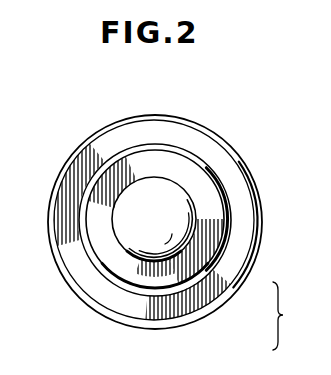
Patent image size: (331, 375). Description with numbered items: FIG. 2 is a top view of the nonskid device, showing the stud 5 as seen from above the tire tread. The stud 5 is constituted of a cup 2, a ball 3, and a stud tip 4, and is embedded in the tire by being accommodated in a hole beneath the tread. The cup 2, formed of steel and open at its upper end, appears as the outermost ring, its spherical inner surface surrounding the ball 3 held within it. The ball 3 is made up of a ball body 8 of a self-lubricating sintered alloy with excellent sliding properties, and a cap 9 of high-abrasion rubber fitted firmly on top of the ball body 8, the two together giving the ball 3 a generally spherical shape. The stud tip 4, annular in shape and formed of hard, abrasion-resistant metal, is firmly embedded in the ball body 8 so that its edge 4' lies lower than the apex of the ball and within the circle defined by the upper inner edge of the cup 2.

The cup 2 is at (250, 229).
The ball 3 is at (286, 316).
The stud tip 4 is at (144, 211).
The edge of the stud tip 4' is at (155, 184).
The stud 5 is at (247, 150).
The ball body 8 is at (199, 283).
The cap 9 is at (188, 232).